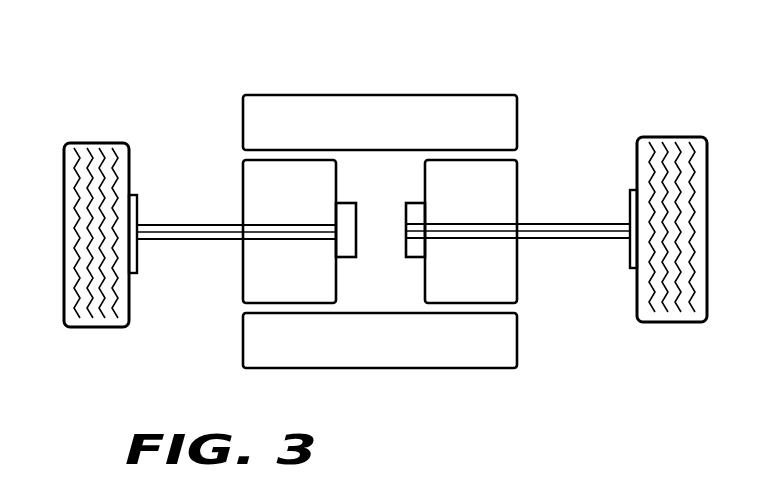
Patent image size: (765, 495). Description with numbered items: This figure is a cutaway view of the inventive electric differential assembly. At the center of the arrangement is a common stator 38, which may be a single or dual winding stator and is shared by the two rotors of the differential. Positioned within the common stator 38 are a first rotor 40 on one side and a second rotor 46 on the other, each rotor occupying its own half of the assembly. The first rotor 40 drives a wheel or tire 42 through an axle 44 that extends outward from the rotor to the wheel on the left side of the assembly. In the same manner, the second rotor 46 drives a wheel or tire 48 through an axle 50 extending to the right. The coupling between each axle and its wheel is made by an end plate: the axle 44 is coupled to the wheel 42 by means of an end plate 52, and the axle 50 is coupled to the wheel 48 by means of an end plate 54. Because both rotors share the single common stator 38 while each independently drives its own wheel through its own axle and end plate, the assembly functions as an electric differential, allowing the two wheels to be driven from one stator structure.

The common stator 38 is at (378, 94).
The first rotor 40 is at (278, 282).
The wheel or tire 42 is at (95, 143).
The axle 44 is at (195, 224).
The second rotor 46 is at (461, 282).
The wheel or tire 48 is at (667, 137).
The axle 50 is at (568, 223).
The end plate 52 is at (137, 259).
The end plate 54 is at (630, 261).